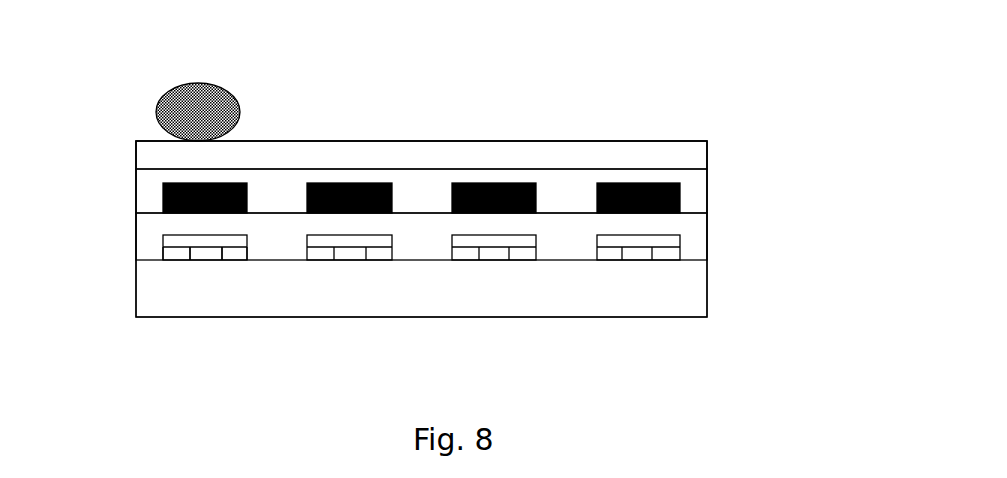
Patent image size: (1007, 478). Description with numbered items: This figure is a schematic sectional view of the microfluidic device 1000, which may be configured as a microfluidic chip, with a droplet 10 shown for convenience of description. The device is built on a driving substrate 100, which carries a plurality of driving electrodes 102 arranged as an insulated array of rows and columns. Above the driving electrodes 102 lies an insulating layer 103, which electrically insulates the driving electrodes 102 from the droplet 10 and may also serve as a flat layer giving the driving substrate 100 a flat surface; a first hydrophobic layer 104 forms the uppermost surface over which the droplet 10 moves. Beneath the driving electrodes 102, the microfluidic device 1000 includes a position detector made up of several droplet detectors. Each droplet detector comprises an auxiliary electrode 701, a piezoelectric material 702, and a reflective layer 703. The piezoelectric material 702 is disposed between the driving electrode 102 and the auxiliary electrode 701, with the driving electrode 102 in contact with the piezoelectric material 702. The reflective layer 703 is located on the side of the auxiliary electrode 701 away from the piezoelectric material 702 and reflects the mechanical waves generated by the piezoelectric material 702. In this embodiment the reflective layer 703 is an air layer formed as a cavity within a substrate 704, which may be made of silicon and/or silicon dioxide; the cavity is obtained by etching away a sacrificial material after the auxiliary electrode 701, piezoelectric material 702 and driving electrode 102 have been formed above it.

The microfluidic device 1000 is at (707, 110).
The droplet 10 is at (157, 113).
The driving substrate 100 is at (740, 158).
The first hydrophobic layer 104 is at (150, 157).
The insulating layer 103 is at (150, 190).
The driving electrode 102 is at (680, 198).
The piezoelectric material 702 is at (697, 239).
The auxiliary electrode 701 is at (163, 243).
The reflective layer 703 is at (204, 253).
The substrate 704 is at (175, 253).